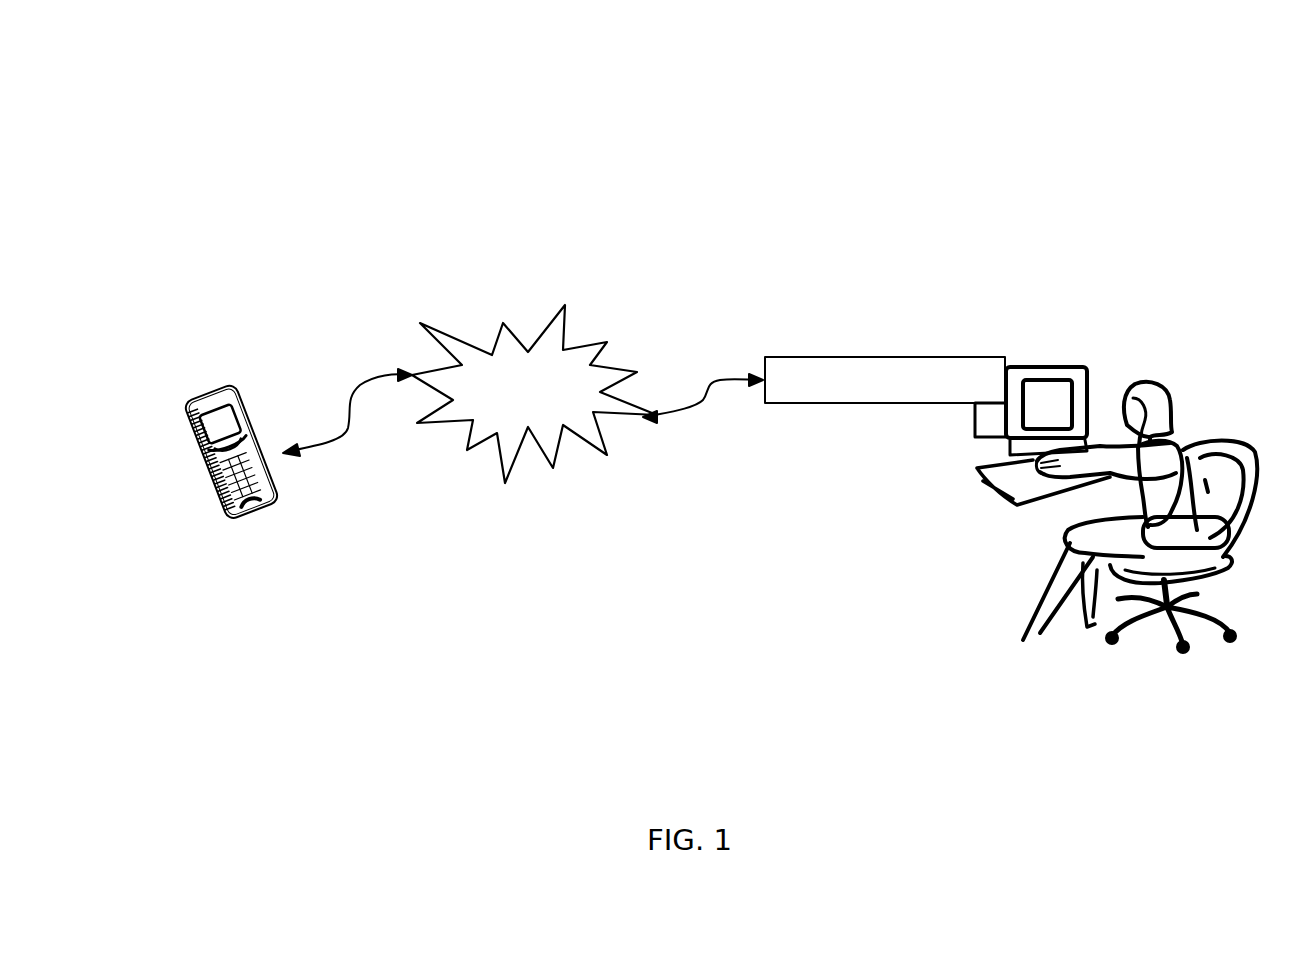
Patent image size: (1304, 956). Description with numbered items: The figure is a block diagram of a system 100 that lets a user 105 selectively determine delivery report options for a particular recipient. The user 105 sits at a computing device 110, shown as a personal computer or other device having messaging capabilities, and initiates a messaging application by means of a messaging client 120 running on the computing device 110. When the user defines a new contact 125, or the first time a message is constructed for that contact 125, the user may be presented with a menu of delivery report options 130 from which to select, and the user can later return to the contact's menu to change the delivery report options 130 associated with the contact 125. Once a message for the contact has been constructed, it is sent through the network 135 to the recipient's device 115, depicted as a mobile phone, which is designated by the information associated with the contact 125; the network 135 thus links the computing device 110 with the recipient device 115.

The system 100 is at (644, 98).
The user 105 is at (1160, 390).
The computing device 110 is at (1066, 367).
The recipient device 115 is at (225, 385).
The messaging client 120 is at (885, 357).
The contact 125 is at (1122, 383).
The delivery report options 130 is at (1043, 367).
The network 135 is at (567, 307).